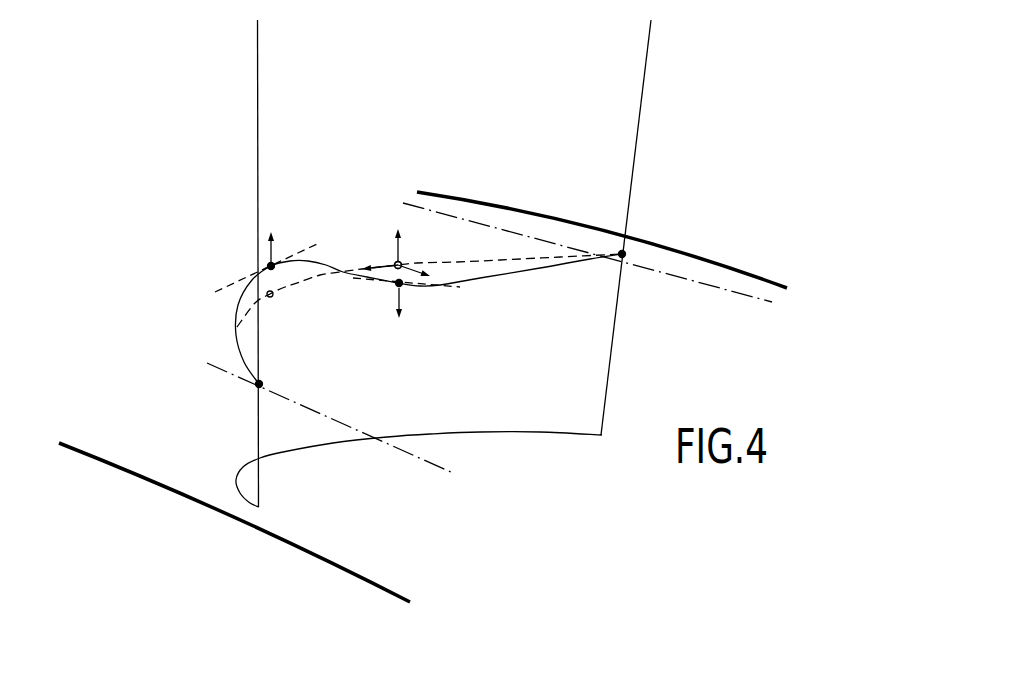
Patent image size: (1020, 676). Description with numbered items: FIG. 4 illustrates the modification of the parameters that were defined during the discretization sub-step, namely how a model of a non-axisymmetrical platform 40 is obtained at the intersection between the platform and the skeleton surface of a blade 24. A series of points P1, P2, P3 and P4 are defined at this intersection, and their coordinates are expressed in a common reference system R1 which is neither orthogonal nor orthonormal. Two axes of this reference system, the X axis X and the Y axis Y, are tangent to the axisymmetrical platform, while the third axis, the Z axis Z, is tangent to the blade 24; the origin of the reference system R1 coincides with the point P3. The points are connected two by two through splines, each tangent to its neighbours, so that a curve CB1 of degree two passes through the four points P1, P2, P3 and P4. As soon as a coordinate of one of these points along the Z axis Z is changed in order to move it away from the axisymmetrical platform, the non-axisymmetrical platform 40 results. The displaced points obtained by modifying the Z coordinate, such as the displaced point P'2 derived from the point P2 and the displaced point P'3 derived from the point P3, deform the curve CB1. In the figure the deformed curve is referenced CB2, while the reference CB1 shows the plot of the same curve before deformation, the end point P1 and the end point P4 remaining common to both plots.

The blade 24 is at (252, 155).
The non-axisymmetrical platform 40 is at (381, 540).
The reference system R1 is at (396, 220).
The curve of degree 2 CB1 is at (486, 257).
The deformed curve CB2 is at (485, 279).
The X axis X is at (372, 259).
The Y axis Y is at (422, 265).
The Z axis Z is at (408, 244).
The point P1 is at (285, 378).
The point P2 is at (274, 306).
The displaced point P'2 is at (259, 251).
The point P3 is at (385, 258).
The displaced point P'3 is at (388, 299).
The point P4 is at (620, 266).